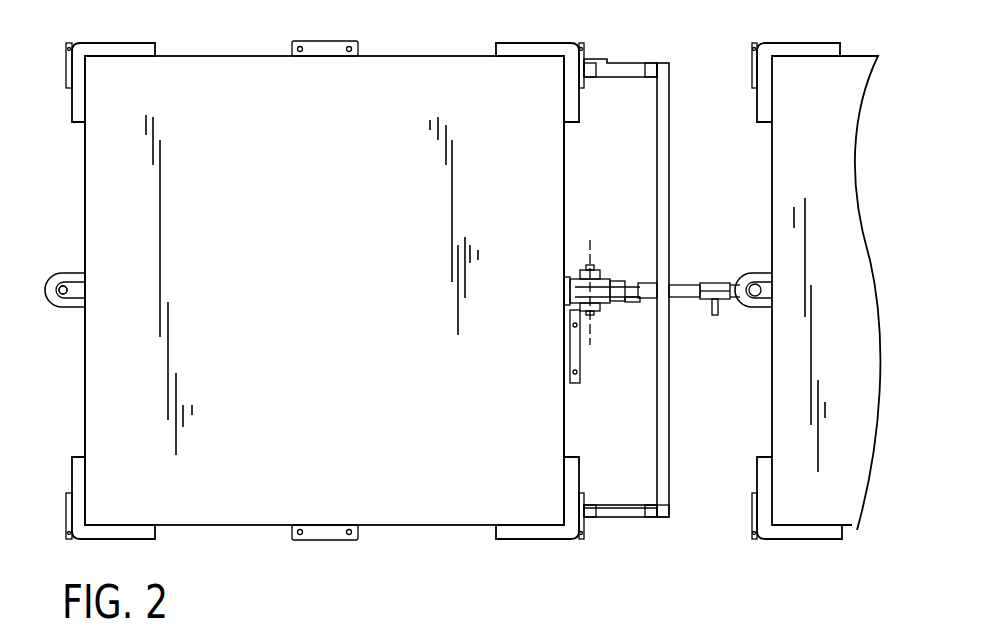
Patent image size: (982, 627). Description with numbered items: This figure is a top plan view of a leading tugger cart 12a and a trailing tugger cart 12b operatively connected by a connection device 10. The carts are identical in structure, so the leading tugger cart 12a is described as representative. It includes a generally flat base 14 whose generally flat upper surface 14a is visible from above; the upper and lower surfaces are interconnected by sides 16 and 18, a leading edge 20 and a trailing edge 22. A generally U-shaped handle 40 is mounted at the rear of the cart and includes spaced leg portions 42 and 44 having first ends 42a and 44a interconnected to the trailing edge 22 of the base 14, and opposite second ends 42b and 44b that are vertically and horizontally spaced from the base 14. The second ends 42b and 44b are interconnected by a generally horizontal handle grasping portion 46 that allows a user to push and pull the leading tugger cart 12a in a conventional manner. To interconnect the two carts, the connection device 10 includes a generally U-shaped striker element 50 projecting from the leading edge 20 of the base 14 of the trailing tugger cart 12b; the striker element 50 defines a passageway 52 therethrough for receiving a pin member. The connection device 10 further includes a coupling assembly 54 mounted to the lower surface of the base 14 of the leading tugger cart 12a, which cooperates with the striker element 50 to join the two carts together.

The connection device 10 is at (652, 304).
The leading tugger cart 12a is at (392, 543).
The trailing tugger cart 12b is at (862, 538).
The base 14 is at (181, 531).
The upper surface 14a is at (328, 256).
The side 16 is at (212, 56).
The side 18 is at (243, 526).
The leading edge 20 is at (85, 370).
The trailing edge 22 is at (566, 176).
The handle 40 is at (660, 522).
The leg portion 42 is at (668, 85).
The first end 42a is at (588, 80).
The second end 42b is at (660, 60).
The leg portion 44 is at (622, 506).
The first end 44a is at (590, 500).
The second end 44b is at (652, 498).
The handle grasping portion 46 is at (670, 152).
The striker element 50 is at (63, 273).
The passageway 52 is at (66, 292).
The coupling assembly 54 is at (630, 275).